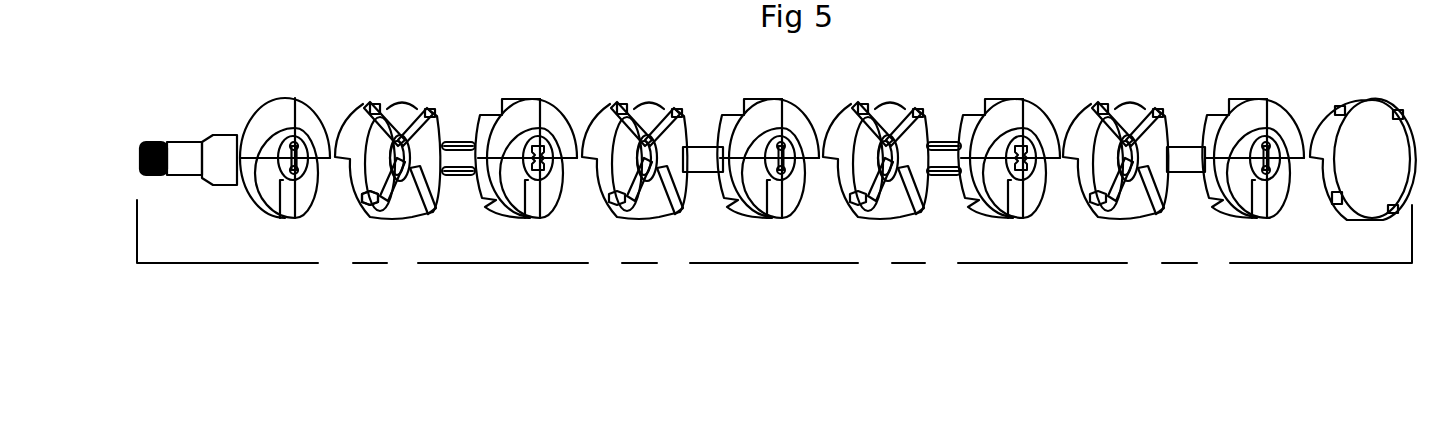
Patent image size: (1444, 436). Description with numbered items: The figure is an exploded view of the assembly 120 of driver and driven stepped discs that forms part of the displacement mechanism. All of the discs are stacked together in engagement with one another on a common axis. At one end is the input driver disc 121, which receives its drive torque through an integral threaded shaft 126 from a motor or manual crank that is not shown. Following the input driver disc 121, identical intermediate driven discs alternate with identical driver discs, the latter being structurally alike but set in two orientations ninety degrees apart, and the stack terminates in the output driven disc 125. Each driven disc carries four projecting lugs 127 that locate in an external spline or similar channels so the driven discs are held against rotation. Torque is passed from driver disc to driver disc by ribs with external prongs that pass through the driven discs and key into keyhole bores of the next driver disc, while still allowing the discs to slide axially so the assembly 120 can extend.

The assembly 120 is at (773, 263).
The input driver disc 121 is at (272, 98).
The output driven disc 125 is at (1373, 100).
The threaded shaft 126 is at (193, 140).
The projecting lug 127 is at (363, 213).